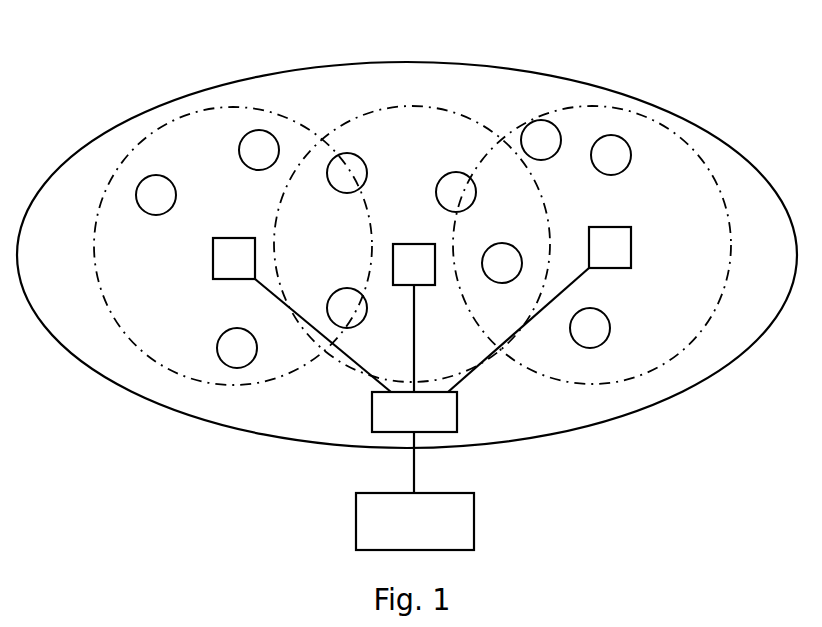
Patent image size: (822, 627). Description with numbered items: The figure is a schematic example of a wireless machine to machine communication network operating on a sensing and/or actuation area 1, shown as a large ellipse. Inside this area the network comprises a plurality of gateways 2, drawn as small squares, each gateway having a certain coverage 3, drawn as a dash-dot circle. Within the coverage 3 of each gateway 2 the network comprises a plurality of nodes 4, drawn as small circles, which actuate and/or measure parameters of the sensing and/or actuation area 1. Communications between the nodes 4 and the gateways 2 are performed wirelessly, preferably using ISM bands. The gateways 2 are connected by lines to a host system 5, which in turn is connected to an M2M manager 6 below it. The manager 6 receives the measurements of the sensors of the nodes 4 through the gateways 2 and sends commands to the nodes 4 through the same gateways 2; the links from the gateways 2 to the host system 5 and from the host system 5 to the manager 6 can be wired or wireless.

The sensing and/or actuation area 1 is at (386, 62).
The gateway 2 is at (250, 238).
The coverage 3 is at (186, 117).
The node 4 is at (541, 120).
The host system 5 is at (372, 398).
The M2M manager 6 is at (474, 518).